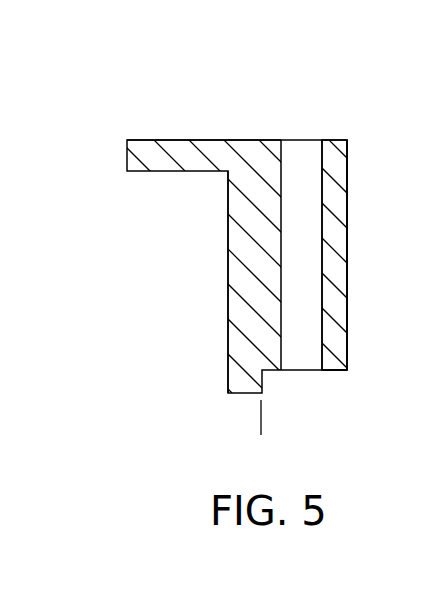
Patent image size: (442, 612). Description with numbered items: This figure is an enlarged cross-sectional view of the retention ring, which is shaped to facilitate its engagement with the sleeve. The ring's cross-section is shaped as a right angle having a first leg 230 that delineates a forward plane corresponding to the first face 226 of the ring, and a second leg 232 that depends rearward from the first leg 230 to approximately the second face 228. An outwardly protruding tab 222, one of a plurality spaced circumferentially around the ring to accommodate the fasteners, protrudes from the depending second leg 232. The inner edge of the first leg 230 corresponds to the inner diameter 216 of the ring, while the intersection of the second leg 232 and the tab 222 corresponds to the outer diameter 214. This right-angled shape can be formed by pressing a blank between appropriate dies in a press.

The outer diameter 214 is at (258, 417).
The inner diameter 216 is at (127, 155).
The tab 222 is at (347, 230).
The first face 226 is at (333, 138).
The second face 228 is at (333, 372).
The first leg 230 is at (195, 140).
The second leg 232 is at (228, 234).